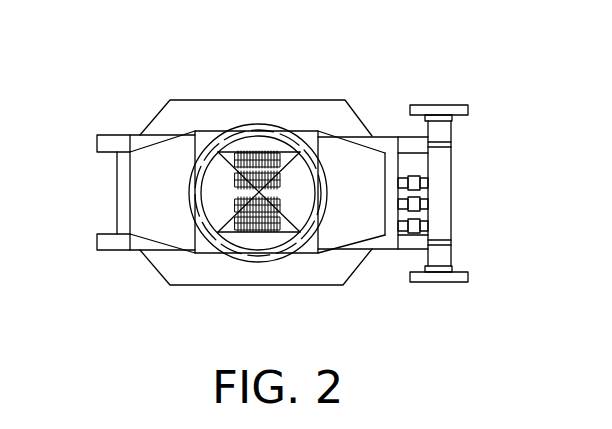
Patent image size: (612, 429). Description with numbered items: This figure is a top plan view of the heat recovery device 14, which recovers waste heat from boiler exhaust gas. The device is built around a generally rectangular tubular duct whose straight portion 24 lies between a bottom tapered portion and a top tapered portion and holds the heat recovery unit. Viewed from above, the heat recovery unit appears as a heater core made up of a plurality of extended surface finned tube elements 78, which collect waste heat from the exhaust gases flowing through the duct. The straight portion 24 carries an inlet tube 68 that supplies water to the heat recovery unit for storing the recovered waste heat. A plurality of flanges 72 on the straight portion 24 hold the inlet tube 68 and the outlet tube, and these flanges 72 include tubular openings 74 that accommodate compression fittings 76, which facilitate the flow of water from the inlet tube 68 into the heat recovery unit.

The heat recovery device 14 is at (125, 90).
The straight portion 24 is at (290, 100).
The inlet tube 68 is at (455, 105).
The flanges 72 is at (115, 250).
The tubular openings 74 is at (393, 178).
The compression fittings 76 is at (428, 181).
The finned tube elements 78 is at (257, 152).